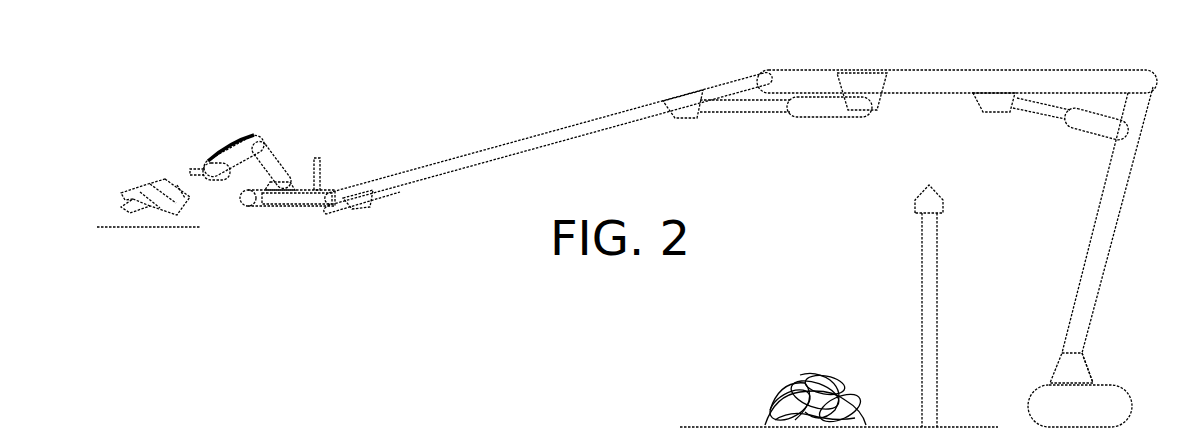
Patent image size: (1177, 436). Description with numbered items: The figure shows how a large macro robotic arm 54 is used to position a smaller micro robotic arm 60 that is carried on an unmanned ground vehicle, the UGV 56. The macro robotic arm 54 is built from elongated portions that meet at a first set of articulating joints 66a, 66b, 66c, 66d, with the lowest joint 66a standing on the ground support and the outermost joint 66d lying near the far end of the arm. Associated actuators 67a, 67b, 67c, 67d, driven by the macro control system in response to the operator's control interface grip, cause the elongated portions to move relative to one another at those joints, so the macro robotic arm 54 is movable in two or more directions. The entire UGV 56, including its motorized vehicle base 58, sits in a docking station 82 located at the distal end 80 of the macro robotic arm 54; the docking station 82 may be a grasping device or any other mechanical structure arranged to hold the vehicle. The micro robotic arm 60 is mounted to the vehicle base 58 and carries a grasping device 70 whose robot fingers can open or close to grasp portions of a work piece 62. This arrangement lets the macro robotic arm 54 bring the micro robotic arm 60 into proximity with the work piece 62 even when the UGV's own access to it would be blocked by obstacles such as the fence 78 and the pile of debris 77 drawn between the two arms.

The macro robotic arm 54 is at (461, 97).
The unmanned ground vehicle (UGV) 56 is at (294, 130).
The vehicle base 58 is at (252, 212).
The micro robotic arm 60 is at (221, 132).
The work piece 62 is at (110, 175).
The articulating joint 66a is at (1040, 351).
The articulating joint 66b is at (1136, 76).
The articulating joint 66c is at (761, 68).
The articulating joint 66d is at (334, 170).
The actuator 67a is at (1088, 372).
The actuator 67b is at (1072, 135).
The actuator 67c is at (827, 110).
The actuator 67d is at (372, 197).
The grasping device 70 is at (182, 160).
The debris 77 is at (807, 346).
The fence 78 is at (912, 258).
The distal end 80 is at (277, 226).
The docking station 82 is at (301, 196).